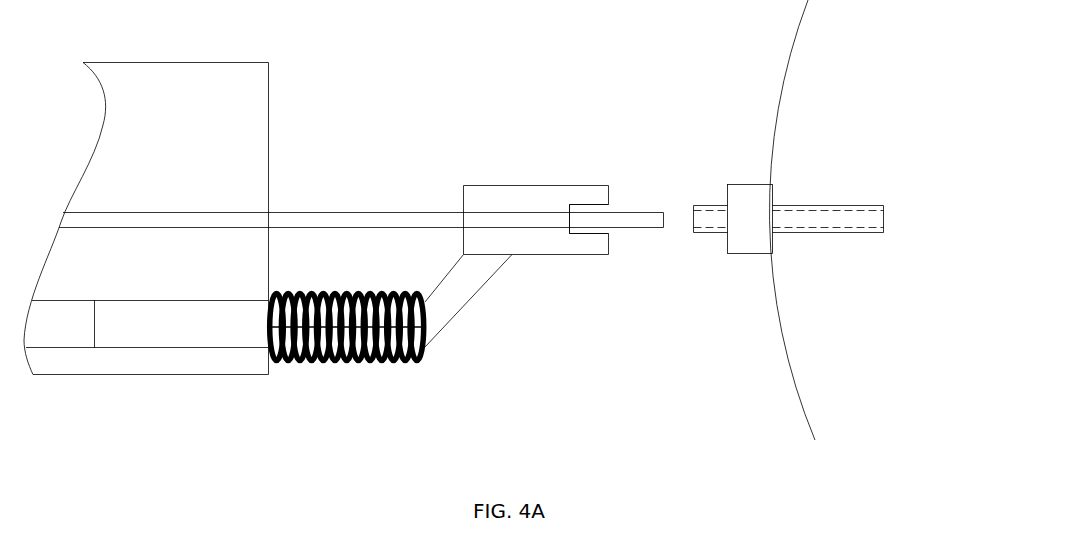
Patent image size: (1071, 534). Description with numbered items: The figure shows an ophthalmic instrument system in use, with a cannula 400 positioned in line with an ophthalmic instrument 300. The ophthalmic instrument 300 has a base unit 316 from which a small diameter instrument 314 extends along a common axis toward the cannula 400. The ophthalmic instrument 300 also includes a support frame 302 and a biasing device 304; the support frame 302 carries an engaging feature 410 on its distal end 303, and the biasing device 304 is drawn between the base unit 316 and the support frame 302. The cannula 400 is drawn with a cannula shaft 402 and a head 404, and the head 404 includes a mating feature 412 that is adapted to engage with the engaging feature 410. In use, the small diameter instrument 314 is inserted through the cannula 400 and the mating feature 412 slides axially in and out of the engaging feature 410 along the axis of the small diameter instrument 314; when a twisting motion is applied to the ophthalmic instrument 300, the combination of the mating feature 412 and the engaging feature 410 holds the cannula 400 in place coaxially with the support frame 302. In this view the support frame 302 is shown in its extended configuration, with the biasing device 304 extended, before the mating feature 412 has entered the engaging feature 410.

The ophthalmic instrument 300 is at (283, 435).
The support frame 302 is at (463, 290).
The distal end 303 is at (523, 198).
The biasing device 304 is at (330, 365).
The small diameter instrument 314 is at (640, 221).
The base unit 316 is at (92, 365).
The cannula 400 is at (824, 265).
The cannula shaft 402 is at (828, 208).
The head 404 is at (742, 192).
The engaging feature 410 is at (577, 192).
The mating feature 412 is at (713, 232).